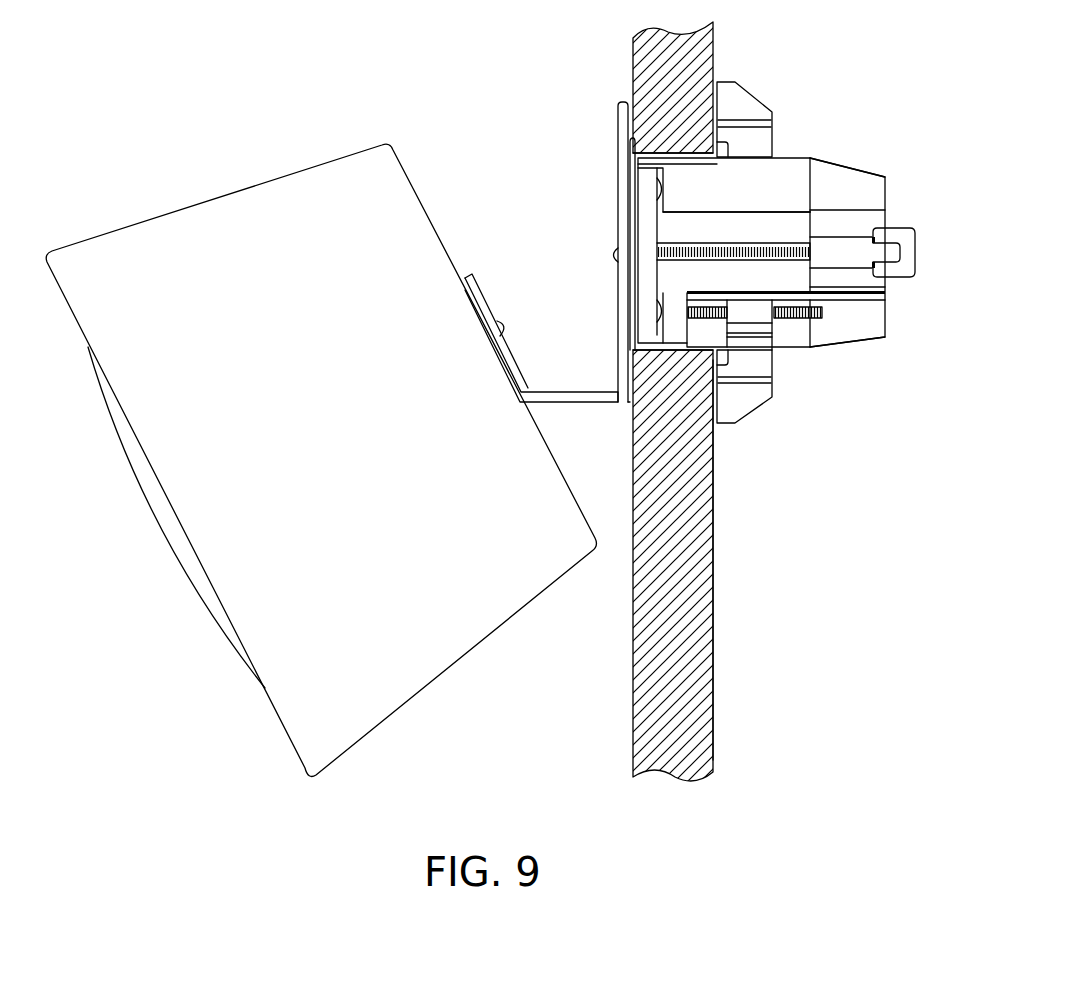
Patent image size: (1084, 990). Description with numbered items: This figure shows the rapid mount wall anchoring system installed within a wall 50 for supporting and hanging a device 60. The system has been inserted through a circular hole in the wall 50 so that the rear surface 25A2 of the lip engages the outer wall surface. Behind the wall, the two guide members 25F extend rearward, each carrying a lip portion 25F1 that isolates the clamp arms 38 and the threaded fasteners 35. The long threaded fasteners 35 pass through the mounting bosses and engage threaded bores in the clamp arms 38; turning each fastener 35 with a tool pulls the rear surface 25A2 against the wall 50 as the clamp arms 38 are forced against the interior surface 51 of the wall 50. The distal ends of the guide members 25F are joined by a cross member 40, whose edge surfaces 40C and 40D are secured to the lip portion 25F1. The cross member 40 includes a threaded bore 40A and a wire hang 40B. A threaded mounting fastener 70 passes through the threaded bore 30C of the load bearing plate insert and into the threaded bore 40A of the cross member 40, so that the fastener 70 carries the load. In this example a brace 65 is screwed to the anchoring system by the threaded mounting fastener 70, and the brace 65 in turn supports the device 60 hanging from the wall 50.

The clamp arms 38 is at (745, 90).
The rear surface of lip 25A2 is at (637, 140).
The lip portion of guide member 25F1 is at (817, 213).
The guide members 25F is at (840, 175).
The cross member edge surface 40D is at (857, 212).
The threaded bore of cross member 40A is at (860, 247).
The threaded bore of plate insert 30C is at (664, 224).
The threaded mounting fastener 70 is at (690, 252).
The wire hang 40B is at (916, 258).
The brace 65 is at (580, 392).
The cross member 40 is at (880, 283).
The threaded fasteners 35 is at (786, 335).
The cross member edge surface 40C is at (862, 322).
The interior surface of wall 51 is at (738, 503).
The wall 50 is at (714, 638).
The device 60 is at (414, 668).